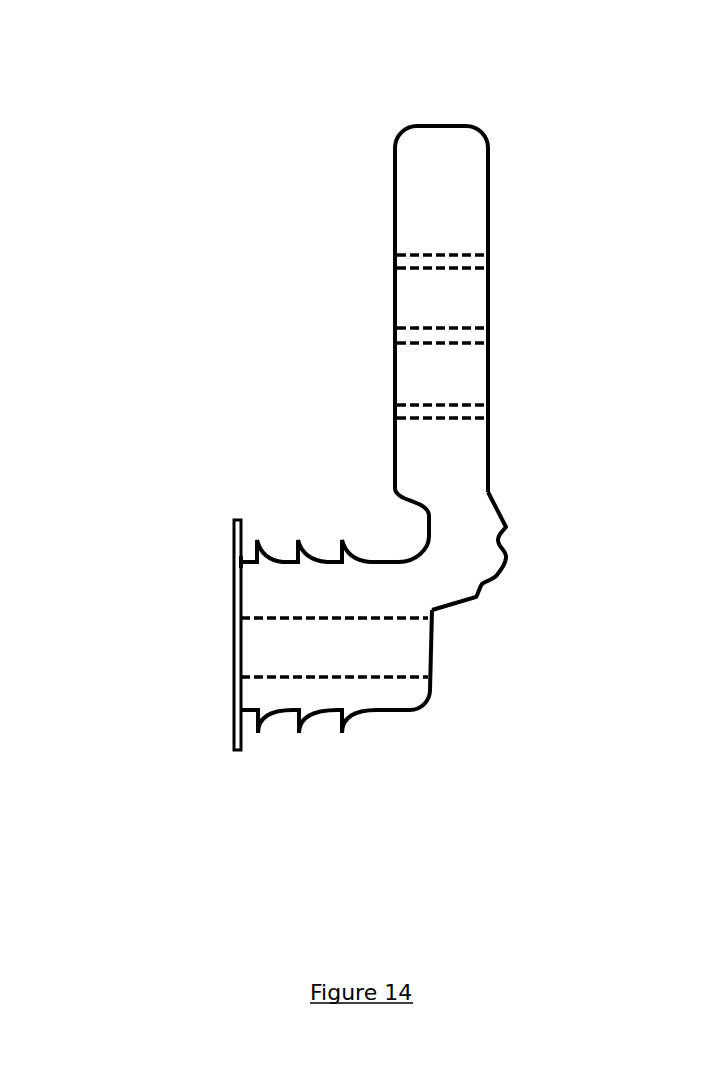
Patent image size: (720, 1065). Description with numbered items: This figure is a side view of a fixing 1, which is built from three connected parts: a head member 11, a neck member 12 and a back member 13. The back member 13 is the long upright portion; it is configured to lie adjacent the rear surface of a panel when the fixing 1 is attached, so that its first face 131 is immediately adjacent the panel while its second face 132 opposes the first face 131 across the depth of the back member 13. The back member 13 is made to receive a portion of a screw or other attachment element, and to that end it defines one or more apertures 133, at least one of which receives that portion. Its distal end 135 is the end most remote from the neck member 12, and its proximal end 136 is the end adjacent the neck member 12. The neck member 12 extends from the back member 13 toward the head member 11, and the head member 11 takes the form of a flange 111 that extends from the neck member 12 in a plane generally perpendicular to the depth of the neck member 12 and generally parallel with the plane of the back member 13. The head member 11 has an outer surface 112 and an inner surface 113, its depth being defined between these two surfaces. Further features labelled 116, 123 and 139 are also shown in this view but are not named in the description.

The fixing 1 is at (216, 314).
The head member 11 is at (226, 599).
The neck member 12 is at (394, 730).
The back member 13 is at (437, 204).
The flange 111 is at (226, 727).
The outer surface 112 is at (225, 532).
The inner surface 113 is at (232, 552).
The hollow channel of lower section 116 is at (265, 642).
The teeth 123 is at (298, 548).
The first face 131 is at (388, 172).
The second face 132 is at (481, 214).
The apertures 133 is at (504, 240).
The distal end 135 is at (432, 97).
The proximal end 136 is at (481, 624).
The scalloped recess 139 is at (457, 549).